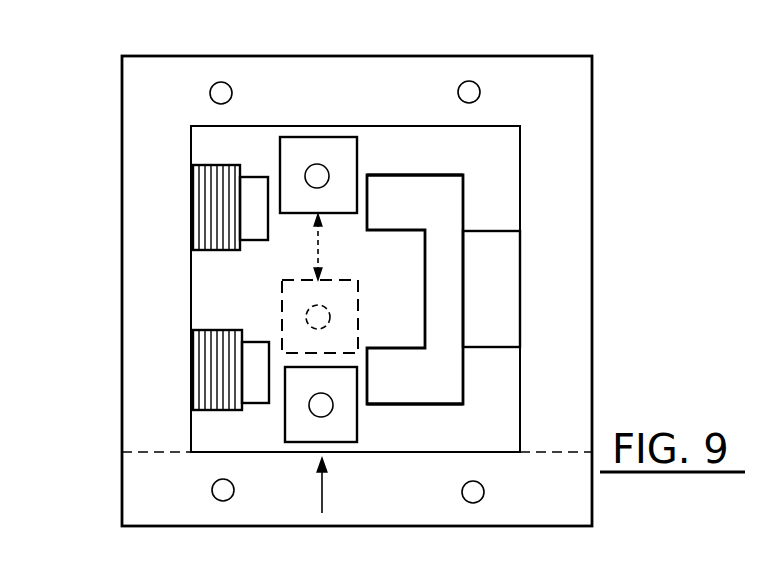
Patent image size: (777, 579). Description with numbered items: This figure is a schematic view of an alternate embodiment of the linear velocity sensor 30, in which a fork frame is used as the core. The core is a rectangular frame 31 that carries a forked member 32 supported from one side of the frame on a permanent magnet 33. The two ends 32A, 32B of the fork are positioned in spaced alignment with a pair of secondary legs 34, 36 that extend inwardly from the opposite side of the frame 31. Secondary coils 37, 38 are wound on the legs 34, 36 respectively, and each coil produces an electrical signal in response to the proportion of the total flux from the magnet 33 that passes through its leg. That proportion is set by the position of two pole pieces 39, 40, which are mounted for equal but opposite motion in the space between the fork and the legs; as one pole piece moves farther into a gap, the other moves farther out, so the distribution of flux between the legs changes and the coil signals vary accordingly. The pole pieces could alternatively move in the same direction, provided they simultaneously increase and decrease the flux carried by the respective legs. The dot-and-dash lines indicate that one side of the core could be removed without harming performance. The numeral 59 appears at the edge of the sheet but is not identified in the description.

The linear velocity sensor 30 is at (517, 535).
The rectangular frame 31 is at (593, 127).
The forked member 32 is at (463, 200).
The end of fork 32A is at (410, 200).
The end of fork 32B is at (401, 386).
The permanent magnet 33 is at (498, 288).
The secondary leg 34 is at (250, 192).
The secondary leg 36 is at (252, 390).
The secondary coil 37 is at (208, 228).
The secondary coil 38 is at (212, 355).
The pole piece 39 is at (328, 205).
The pole piece 40 is at (358, 343).
The direction arrow 59 is at (115, 578).